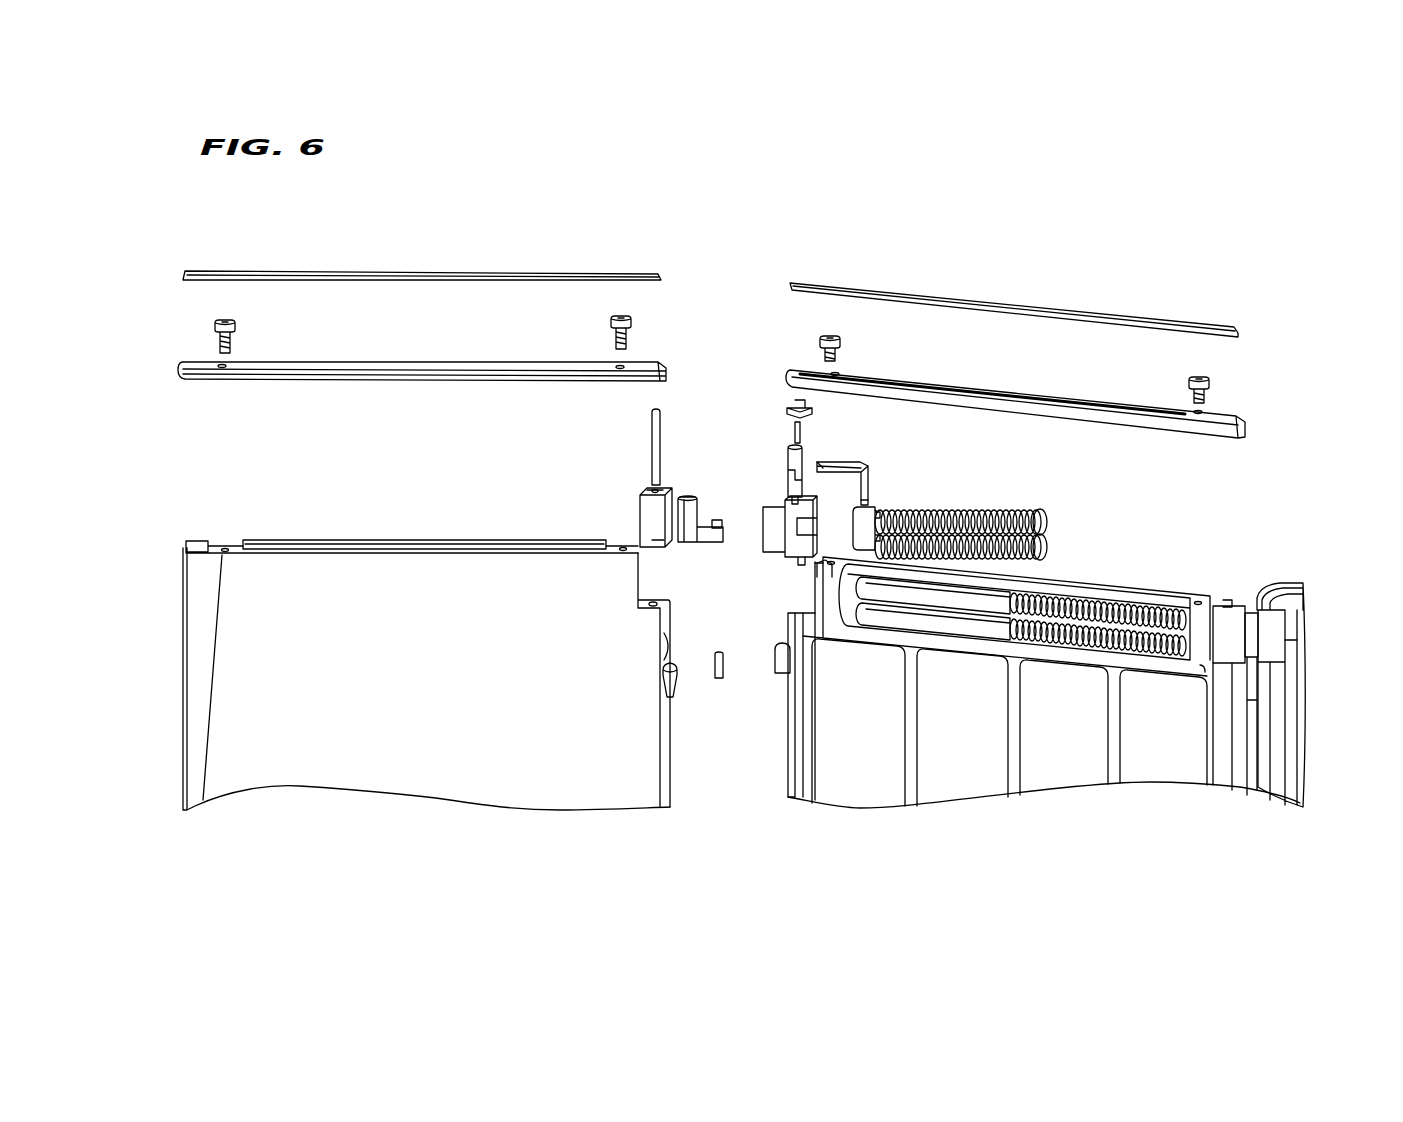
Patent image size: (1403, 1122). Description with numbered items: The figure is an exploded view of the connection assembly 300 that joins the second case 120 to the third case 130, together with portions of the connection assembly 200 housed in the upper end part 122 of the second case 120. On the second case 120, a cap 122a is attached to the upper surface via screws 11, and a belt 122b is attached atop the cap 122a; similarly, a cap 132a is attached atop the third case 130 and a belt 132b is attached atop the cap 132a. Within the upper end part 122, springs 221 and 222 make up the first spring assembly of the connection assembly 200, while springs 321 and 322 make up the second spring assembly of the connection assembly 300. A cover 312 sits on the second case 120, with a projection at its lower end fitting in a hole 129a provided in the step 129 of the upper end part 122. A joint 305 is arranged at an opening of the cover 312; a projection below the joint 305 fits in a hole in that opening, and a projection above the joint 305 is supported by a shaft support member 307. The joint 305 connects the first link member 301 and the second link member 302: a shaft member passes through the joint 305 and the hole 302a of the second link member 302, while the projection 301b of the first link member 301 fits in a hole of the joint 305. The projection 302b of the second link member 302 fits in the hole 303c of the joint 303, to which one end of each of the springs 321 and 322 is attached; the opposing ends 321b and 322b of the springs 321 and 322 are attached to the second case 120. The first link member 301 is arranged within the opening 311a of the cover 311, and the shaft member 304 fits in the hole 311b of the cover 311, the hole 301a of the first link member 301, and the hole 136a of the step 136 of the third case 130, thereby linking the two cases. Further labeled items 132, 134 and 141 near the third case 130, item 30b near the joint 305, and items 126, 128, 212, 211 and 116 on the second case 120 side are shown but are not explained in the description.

The screws 11 is at (237, 330).
The belt 132b is at (398, 272).
The cap 132a is at (380, 362).
The guide member 132 is at (400, 585).
The third case 130 is at (330, 768).
The step 136 is at (637, 582).
The hole 136a is at (653, 612).
The positioning pin 134 is at (668, 693).
The pin 141 is at (718, 680).
The connection assembly 300 is at (697, 357).
The shaft member 304 is at (661, 425).
The cover 311 is at (640, 515).
The opening 311a is at (675, 548).
The hole 311b is at (648, 488).
The first link member 301 is at (700, 543).
The hole 301a is at (698, 479).
The projection 301b is at (717, 522).
The cover 312 is at (790, 548).
The hole 129a is at (803, 612).
The shaft support member 307 is at (790, 403).
The pin 30b is at (795, 432).
The joint 305 is at (788, 463).
The second link member 302 is at (863, 465).
The hole 302a is at (820, 462).
The projection 302b is at (868, 468).
The joint 303 is at (878, 507).
The hole 303c is at (858, 512).
The spring 321 is at (965, 512).
The spring 322 is at (993, 540).
The opposing end 321b is at (1047, 528).
The opposing end 322b is at (1047, 553).
The belt 122b is at (1013, 300).
The cap 122a is at (1023, 393).
The upper end part 122 is at (968, 645).
The second case 120 is at (990, 790).
The positioning pin 126 is at (782, 668).
The step 129 is at (817, 623).
The spring 222 is at (1108, 635).
The spring 221 is at (1153, 603).
The guide strip 212 is at (1232, 665).
The frame corner 128 is at (1215, 668).
The connection assembly 200 is at (1248, 562).
The cover member 211 is at (1272, 638).
The side wall 116 is at (1273, 643).